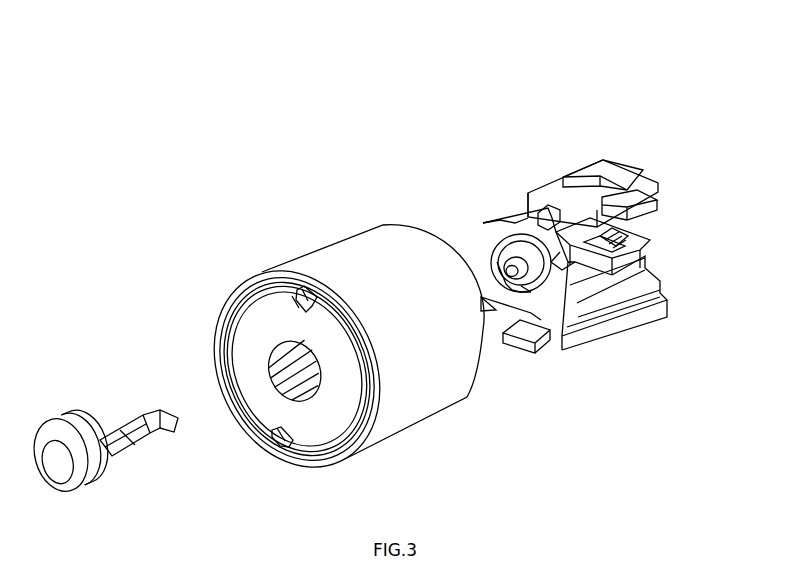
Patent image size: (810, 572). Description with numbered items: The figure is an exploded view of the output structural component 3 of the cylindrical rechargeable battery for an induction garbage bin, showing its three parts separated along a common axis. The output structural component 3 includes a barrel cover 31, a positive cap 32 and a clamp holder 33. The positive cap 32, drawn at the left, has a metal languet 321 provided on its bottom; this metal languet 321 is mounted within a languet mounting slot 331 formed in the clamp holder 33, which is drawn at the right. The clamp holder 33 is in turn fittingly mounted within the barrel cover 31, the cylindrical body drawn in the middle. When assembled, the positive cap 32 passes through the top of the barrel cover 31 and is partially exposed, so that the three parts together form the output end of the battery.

The output structural component 3 is at (279, 183).
The barrel cover 31 is at (352, 268).
The positive cap 32 is at (71, 435).
The metal languet 321 is at (141, 418).
The clamp holder 33 is at (529, 218).
The languet mounting slot 331 is at (626, 250).